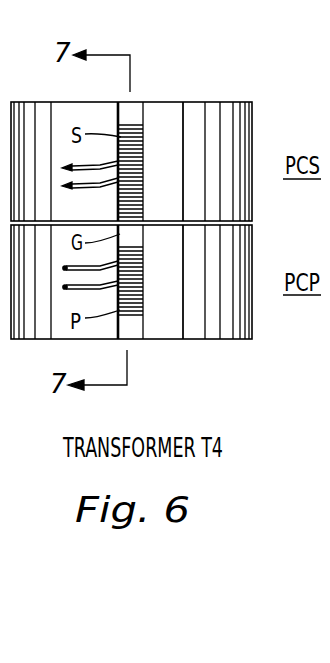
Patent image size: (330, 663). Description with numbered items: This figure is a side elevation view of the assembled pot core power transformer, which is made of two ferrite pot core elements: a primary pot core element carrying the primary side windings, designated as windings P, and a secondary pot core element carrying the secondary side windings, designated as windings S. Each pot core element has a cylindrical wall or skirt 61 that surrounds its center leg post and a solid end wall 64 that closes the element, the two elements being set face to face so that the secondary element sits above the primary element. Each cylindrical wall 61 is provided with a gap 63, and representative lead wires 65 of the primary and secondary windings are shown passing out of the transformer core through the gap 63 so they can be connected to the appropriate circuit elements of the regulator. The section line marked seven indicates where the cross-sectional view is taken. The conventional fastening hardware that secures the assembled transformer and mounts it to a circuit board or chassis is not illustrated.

The cylindrical wall 61 is at (250, 133).
The gap 63 is at (133, 108).
The solid end wall 64 is at (192, 103).
The lead wires 65 is at (62, 186).